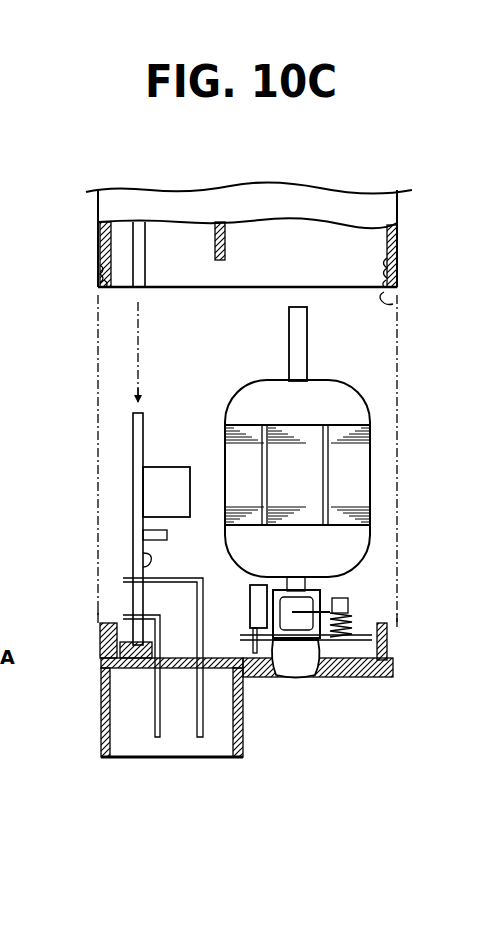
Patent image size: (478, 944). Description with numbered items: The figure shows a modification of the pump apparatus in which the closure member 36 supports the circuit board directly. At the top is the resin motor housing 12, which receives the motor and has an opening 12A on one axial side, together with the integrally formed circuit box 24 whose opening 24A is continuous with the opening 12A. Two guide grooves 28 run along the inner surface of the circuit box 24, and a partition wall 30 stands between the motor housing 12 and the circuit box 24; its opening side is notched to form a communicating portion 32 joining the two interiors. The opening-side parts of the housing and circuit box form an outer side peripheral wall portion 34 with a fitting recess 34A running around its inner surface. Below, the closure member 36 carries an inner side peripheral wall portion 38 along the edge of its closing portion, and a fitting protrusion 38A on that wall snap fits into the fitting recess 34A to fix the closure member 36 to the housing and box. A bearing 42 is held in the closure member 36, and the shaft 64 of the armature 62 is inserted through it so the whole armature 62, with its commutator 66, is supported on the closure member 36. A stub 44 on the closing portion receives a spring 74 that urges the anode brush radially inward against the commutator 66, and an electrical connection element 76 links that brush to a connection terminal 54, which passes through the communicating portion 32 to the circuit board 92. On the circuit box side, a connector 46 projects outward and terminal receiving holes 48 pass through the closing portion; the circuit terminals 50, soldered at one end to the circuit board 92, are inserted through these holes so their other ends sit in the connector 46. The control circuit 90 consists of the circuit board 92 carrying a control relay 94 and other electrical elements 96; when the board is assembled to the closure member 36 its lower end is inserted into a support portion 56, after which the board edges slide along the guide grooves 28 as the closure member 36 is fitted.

The motor housing 12 is at (398, 232).
The opening 12A is at (380, 298).
The circuit box 24 is at (100, 240).
The opening 24A is at (103, 288).
The guide grooves 28 is at (145, 282).
The partition wall 30 is at (212, 232).
The communicating portion 32 is at (225, 276).
The outer side peripheral wall portion 34 is at (395, 283).
The fitting recess 34A is at (398, 262).
The closure member 36 is at (368, 678).
The inner side peripheral wall portion 38 is at (388, 632).
The fitting protrusion 38A is at (385, 655).
The bearing 42 is at (302, 672).
The stub 44 is at (348, 605).
The connector 46 is at (101, 712).
The terminal receiving holes 48 is at (140, 668).
The circuit terminals 50 is at (195, 578).
The connection terminal 54 is at (264, 662).
The support portion 56 is at (100, 650).
The armature 62 is at (376, 468).
The shaft 64 is at (318, 592).
The commutator 66 is at (328, 612).
The spring 74 is at (352, 625).
The electrical connection element 76 is at (252, 590).
The control circuit 90 is at (133, 432).
The circuit board 92 is at (133, 505).
The control relay 94 is at (175, 467).
The electrical elements 96 is at (143, 565).